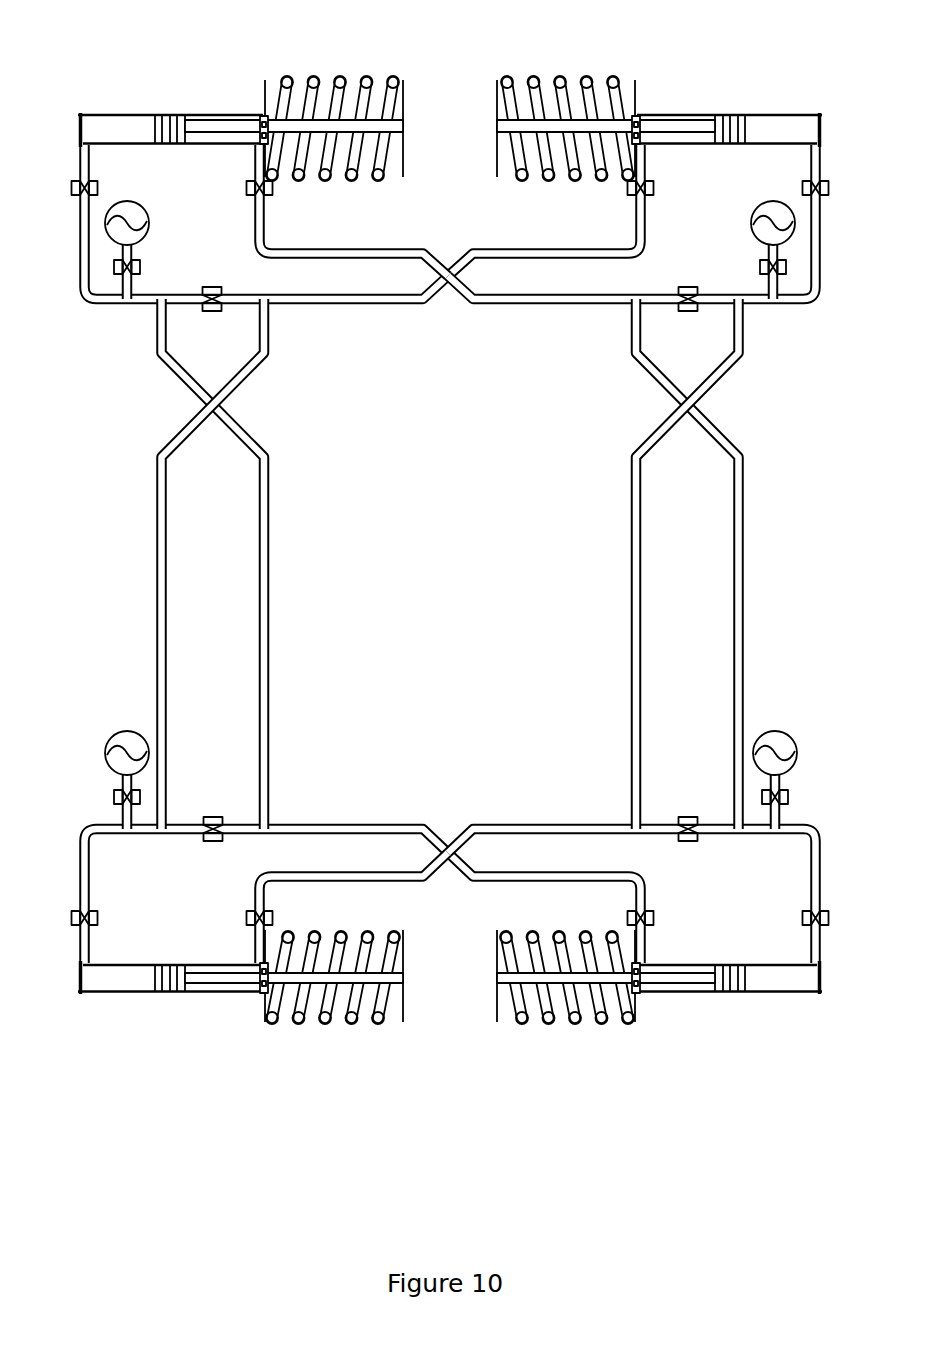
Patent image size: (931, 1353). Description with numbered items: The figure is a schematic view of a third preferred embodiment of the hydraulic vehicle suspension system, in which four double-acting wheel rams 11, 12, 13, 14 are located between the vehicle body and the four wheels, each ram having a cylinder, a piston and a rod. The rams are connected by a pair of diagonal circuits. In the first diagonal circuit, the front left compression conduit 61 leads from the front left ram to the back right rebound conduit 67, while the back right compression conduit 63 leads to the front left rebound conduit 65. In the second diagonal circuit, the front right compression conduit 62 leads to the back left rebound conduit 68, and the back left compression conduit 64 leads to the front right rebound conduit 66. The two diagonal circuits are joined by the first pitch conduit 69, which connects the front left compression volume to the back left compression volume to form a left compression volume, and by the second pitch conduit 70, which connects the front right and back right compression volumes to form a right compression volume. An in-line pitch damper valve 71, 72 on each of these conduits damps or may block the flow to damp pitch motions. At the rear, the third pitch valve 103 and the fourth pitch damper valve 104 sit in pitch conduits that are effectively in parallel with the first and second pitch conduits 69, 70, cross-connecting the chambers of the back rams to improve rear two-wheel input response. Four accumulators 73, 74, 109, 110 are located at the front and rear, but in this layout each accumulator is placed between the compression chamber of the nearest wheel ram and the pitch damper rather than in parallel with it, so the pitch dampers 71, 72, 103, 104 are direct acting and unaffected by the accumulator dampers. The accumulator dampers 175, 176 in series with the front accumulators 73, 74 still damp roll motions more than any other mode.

The wheel ram 11 is at (172, 78).
The wheel ram 12 is at (728, 78).
The wheel ram 13 is at (716, 1036).
The wheel ram 14 is at (176, 1036).
The front left compression conduit 61 is at (91, 213).
The front right compression conduit 62 is at (812, 210).
The back right compression conduit 63 is at (812, 880).
The back left compression conduit 64 is at (92, 880).
The front left rebound conduit 65 is at (265, 224).
The front right rebound conduit 66 is at (632, 224).
The back right rebound conduit 67 is at (642, 877).
The back left rebound conduit 68 is at (259, 877).
The first pitch conduit 69 is at (183, 306).
The second pitch conduit 70 is at (715, 306).
The pitch damper valve 71 is at (216, 289).
The pitch damper valve 72 is at (685, 289).
The accumulator 73 is at (143, 207).
The accumulator 74 is at (757, 207).
The third pitch valve 103 is at (213, 816).
The fourth pitch damper valve 104 is at (688, 816).
The third accumulator 109 is at (127, 731).
The fourth accumulator 110 is at (777, 731).
The accumulator damper 175 is at (142, 261).
The accumulator damper 176 is at (760, 260).